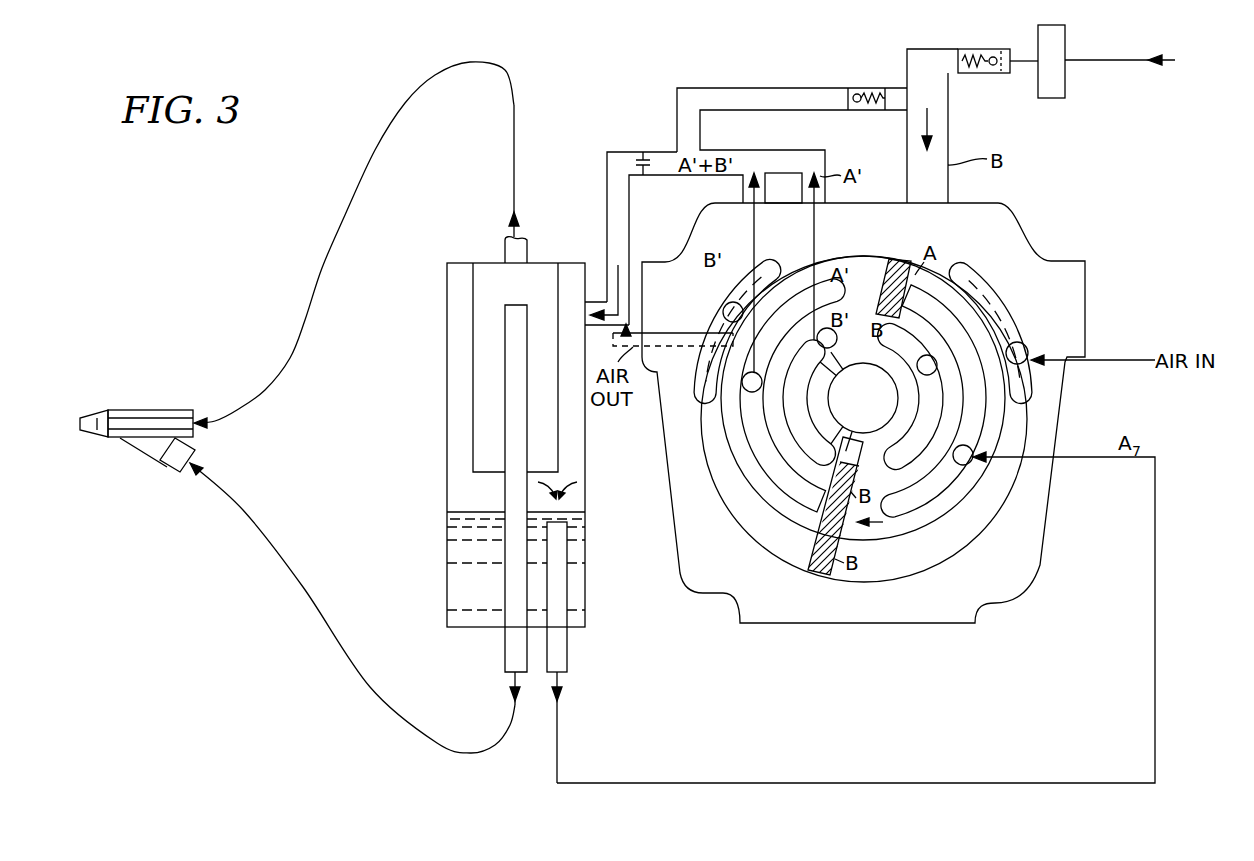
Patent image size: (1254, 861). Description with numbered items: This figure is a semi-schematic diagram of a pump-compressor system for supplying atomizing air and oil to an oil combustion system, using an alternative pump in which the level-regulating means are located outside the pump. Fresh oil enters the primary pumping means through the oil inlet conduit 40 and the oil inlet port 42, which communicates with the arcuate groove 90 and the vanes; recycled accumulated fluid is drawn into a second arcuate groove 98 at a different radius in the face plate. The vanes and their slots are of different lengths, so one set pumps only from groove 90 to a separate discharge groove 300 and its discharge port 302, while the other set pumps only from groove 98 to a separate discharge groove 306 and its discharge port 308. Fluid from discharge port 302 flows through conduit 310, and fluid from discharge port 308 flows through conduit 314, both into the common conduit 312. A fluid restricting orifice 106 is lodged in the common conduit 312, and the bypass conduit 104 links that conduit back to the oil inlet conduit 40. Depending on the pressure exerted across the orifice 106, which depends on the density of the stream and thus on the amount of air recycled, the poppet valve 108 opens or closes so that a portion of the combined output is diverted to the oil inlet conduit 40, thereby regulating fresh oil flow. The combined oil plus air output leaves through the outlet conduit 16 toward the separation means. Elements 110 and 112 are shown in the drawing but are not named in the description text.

The oil plus air outlet conduit 16 is at (556, 448).
The oil inlet conduit 40 is at (171, 400).
The oil inlet port 42 is at (918, 372).
The arcuate groove 90 is at (886, 462).
The arcuate groove 98 is at (896, 518).
The bypass conduit 104 is at (760, 88).
The fluid restricting orifice 106 is at (643, 152).
The poppet valve 108 is at (874, 88).
The conduit 110 is at (835, 102).
The relief valve 112 is at (856, 93).
The discharge groove 300 is at (823, 445).
The discharge port 302 is at (824, 353).
The discharge groove 306 is at (818, 528).
The discharge port 308 is at (723, 311).
The conduit 310 is at (814, 236).
The common conduit 312 is at (705, 176).
The conduit 314 is at (754, 234).